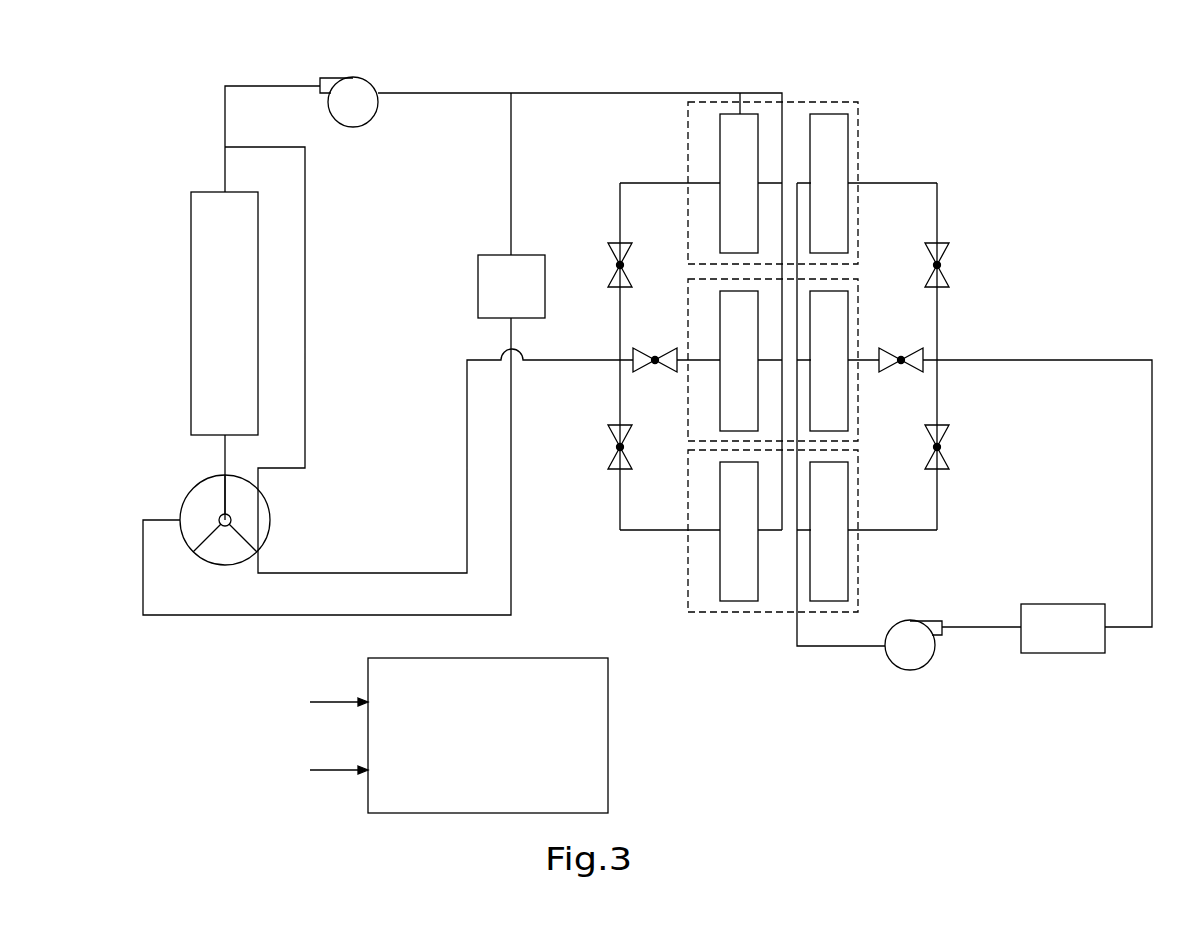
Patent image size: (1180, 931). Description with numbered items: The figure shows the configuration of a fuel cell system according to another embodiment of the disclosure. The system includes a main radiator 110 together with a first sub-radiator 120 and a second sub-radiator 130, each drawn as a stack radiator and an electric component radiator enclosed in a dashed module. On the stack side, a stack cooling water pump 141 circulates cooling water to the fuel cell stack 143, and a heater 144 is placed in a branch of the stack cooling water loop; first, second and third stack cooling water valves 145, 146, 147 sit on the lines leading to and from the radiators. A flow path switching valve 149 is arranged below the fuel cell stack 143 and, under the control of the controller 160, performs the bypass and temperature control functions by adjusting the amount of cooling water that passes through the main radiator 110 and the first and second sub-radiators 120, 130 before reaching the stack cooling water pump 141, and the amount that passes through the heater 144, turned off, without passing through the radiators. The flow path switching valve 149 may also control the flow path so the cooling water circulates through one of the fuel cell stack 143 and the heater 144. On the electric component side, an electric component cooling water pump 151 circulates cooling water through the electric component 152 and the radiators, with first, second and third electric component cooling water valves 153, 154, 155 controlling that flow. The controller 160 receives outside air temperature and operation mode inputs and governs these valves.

The main radiator 110 is at (859, 291).
The first sub-radiator 120 is at (832, 101).
The second sub-radiator 130 is at (859, 575).
The stack cooling water pump 141 is at (353, 77).
The fuel cell stack 143 is at (212, 191).
The heater 144 is at (531, 253).
The first stack cooling water valve 145 is at (663, 374).
The second stack cooling water valve 146 is at (628, 250).
The third stack cooling water valve 147 is at (612, 458).
The flow path switching valve 149 is at (268, 508).
The electric component cooling water pump 151 is at (909, 670).
The electric component 152 is at (1063, 603).
The first electric component cooling water valve 153 is at (887, 374).
The second electric component cooling water valve 154 is at (950, 248).
The third electric component cooling water valve 155 is at (950, 431).
The controller 160 is at (583, 657).